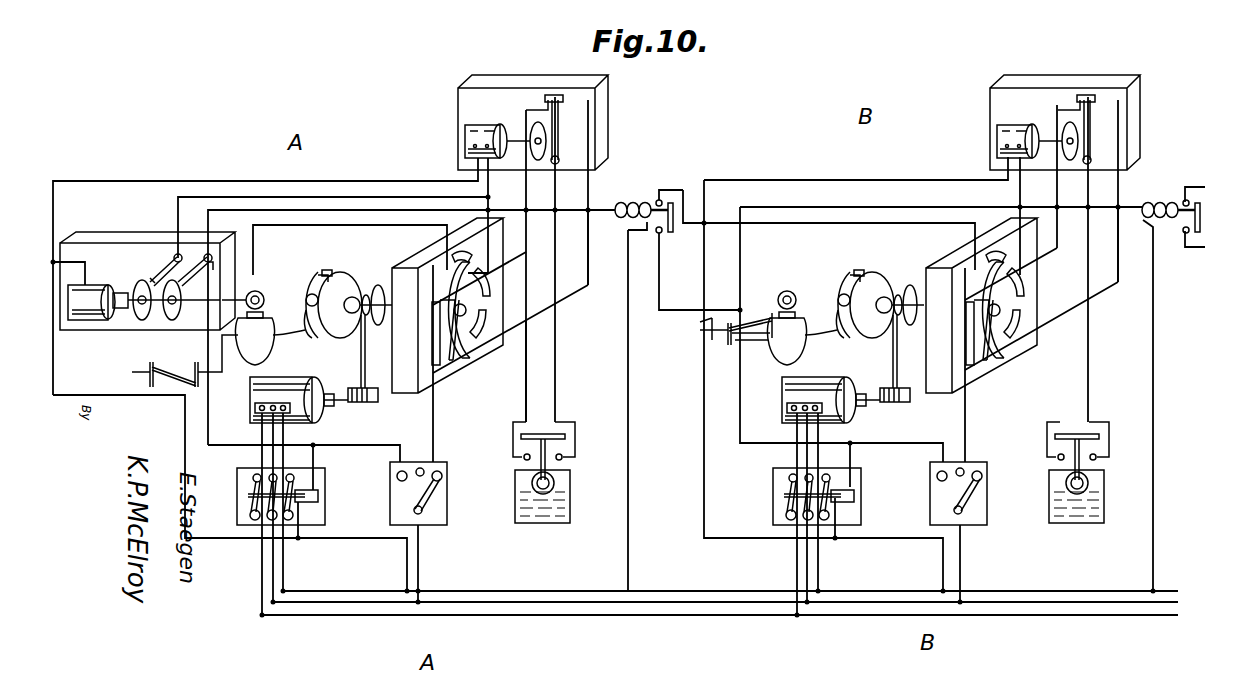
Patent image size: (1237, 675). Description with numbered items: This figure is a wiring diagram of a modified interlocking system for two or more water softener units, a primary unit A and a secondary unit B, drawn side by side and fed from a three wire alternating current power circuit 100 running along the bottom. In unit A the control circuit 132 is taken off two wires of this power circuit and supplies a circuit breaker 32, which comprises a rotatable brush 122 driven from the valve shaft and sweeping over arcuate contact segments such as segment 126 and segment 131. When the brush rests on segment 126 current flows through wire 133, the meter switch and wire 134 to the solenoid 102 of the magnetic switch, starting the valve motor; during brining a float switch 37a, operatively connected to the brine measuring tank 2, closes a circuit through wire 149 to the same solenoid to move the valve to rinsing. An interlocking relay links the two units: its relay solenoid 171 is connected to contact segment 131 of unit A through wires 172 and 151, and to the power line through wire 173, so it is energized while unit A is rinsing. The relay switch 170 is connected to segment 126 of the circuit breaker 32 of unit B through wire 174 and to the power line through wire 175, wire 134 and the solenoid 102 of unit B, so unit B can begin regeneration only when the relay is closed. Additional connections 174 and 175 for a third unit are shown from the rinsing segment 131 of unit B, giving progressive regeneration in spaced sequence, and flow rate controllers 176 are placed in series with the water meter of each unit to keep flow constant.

The brine measuring tank 2 is at (570, 512).
The circuit breaker 32 is at (414, 262).
The float switch 37a is at (1123, 407).
The three wire A. C. power circuit 100 is at (556, 598).
The solenoid 102 is at (312, 500).
The brush element 122 is at (458, 362).
The contact segment 126 is at (440, 290).
The contact segment 131 is at (472, 340).
The control circuit wires 132 is at (408, 575).
The wire 133 is at (328, 226).
The wire 134 is at (760, 400).
The wire 149 is at (530, 346).
The wire 151 is at (585, 288).
The relay switch 170 is at (674, 226).
The relay solenoid 171 is at (637, 205).
The wire 172 is at (614, 207).
The wire 173 is at (630, 416).
The wire 174 is at (681, 190).
The wire 175 is at (680, 312).
The flow rate controller 176 is at (165, 360).